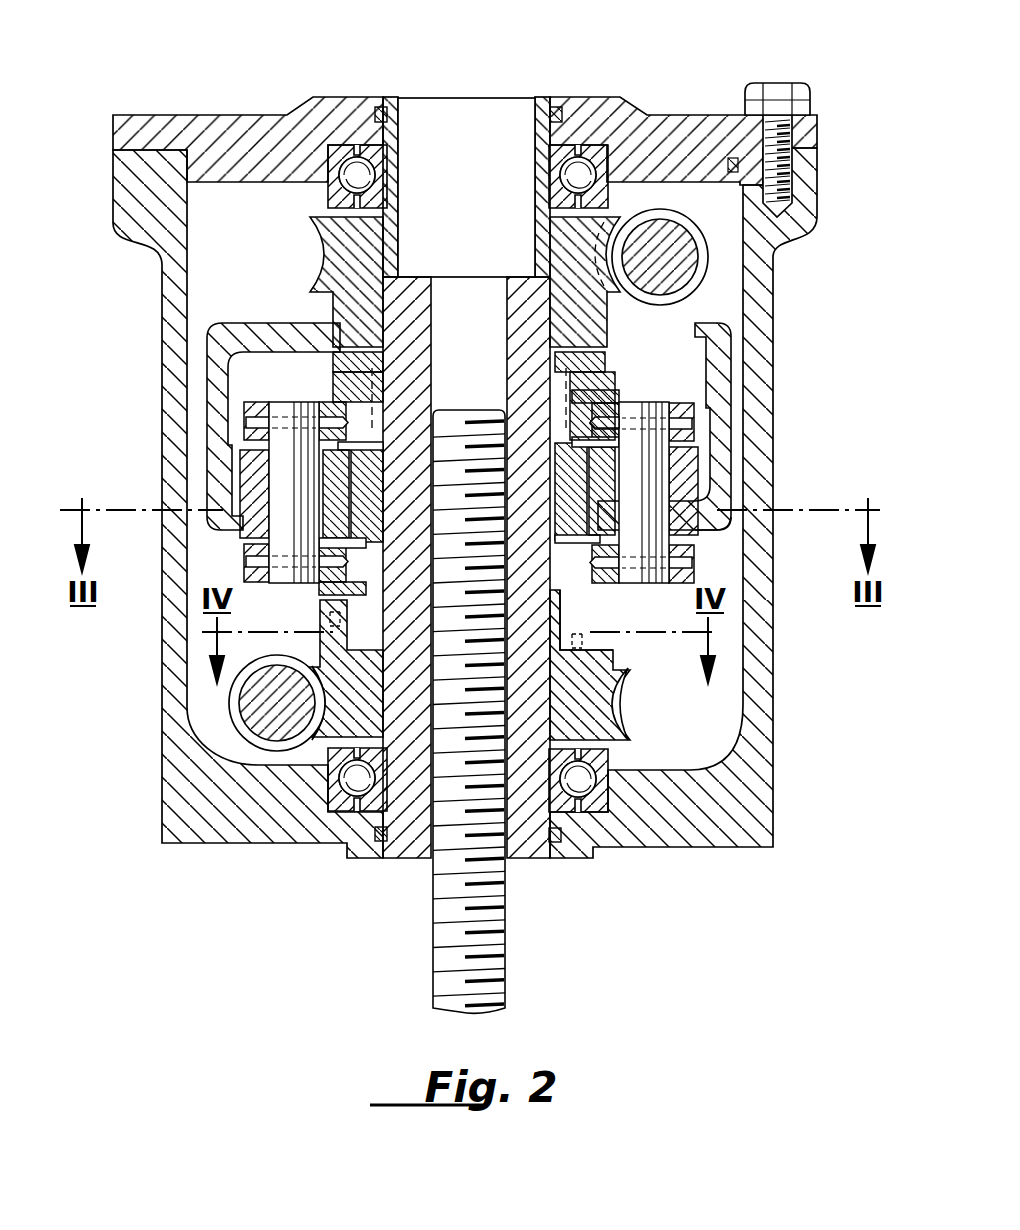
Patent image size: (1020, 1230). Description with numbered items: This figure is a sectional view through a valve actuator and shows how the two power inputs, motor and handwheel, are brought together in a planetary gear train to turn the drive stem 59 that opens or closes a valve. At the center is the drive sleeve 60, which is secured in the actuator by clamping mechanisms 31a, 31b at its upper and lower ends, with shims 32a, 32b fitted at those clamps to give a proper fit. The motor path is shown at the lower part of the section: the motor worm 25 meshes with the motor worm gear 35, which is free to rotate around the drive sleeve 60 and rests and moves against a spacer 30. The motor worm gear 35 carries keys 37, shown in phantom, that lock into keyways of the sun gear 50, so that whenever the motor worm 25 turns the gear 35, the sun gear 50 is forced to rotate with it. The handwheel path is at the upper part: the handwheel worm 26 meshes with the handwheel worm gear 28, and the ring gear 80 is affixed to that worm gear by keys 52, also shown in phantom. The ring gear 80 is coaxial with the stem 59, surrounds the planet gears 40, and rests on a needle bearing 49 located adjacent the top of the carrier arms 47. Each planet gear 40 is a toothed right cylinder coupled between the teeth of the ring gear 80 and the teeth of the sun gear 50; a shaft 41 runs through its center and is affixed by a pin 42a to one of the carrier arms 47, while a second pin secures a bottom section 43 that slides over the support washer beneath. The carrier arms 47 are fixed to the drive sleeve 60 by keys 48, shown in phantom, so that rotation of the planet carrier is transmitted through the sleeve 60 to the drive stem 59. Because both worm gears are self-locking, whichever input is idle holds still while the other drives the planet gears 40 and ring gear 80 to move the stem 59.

The motor worm 25 is at (257, 707).
The handwheel worm 26 is at (670, 262).
The handwheel worm gear 28 is at (318, 245).
The spacer 30 is at (577, 737).
The clamping mechanism 31a is at (333, 797).
The clamping mechanism 31b is at (335, 147).
The shim 32a is at (563, 842).
The shim 32b is at (374, 107).
The motor worm gear 35 is at (593, 700).
The keys 37 is at (333, 617).
The planet gears 40 is at (240, 538).
The shaft 41 is at (650, 497).
The pin 42a is at (690, 422).
The bottom section 43 is at (695, 540).
The carrier arms 47 is at (590, 395).
The keys 48 is at (370, 403).
The needle bearing 49 is at (333, 353).
The sun gear 50 is at (602, 612).
The keys 52 is at (323, 313).
The drive stem 59 is at (450, 962).
The drive sleeve 60 is at (405, 823).
The ring gear 80 is at (713, 345).